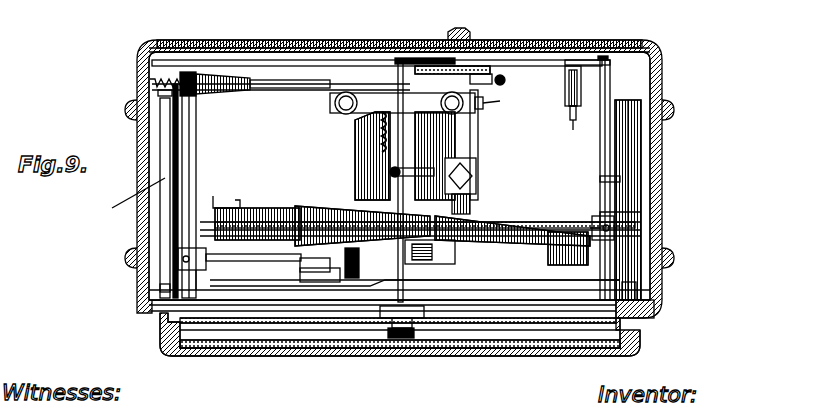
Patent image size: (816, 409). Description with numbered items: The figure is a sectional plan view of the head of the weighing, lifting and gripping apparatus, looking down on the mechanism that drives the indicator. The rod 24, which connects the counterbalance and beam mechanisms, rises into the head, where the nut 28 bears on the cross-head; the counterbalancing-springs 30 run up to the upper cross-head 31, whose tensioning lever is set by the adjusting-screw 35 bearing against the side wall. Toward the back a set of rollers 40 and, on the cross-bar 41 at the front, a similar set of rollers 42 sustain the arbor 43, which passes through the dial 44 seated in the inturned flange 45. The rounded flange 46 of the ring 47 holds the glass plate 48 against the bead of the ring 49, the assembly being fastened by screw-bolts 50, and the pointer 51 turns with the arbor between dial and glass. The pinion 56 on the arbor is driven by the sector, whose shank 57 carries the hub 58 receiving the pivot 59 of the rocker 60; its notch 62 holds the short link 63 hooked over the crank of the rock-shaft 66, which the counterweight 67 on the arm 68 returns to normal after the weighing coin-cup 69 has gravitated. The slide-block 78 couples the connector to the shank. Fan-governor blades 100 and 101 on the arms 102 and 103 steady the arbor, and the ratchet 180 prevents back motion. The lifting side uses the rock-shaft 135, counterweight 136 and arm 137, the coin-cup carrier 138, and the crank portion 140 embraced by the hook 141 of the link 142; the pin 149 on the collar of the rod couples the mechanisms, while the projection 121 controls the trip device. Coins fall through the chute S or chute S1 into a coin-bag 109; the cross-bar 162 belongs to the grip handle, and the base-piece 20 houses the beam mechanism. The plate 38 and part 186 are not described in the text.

The rod 24 is at (430, 48).
The nut 28 is at (458, 28).
The counterbalancing-springs 30 is at (497, 101).
The upper cross-head 31 is at (345, 113).
The adjusting-screw 35 is at (137, 78).
The plate 38 is at (320, 84).
The rollers 40 is at (412, 58).
The cross-bar 41 is at (640, 295).
The rollers 42 is at (414, 310).
The arbor 43 is at (385, 182).
The dial 44 is at (470, 325).
The inturned flange 45 is at (636, 325).
The rounded flange 46 is at (608, 356).
The ring 47 is at (628, 345).
The glass plate 48 is at (598, 336).
The ring 49 is at (168, 325).
The screw-bolts 50 is at (140, 318).
The pointer 51 is at (400, 338).
The pinion 56 is at (372, 42).
The shank 57 is at (606, 70).
The hub 58 is at (560, 86).
The pivot 59 is at (575, 128).
The rocker 60 is at (560, 42).
The notch 62 is at (586, 52).
The short link 63 is at (603, 42).
The rock-shaft 66 is at (606, 88).
The counterweight 67 is at (641, 145).
The arm 68 is at (641, 172).
The weighing coin-cup 69 is at (295, 214).
The slide-block 78 is at (470, 66).
The blade 100 is at (358, 180).
The blade 101 is at (434, 170).
The arm 102 is at (360, 140).
The arm 103 is at (455, 150).
The coin-bag 109 is at (506, 186).
The projection 121 is at (432, 256).
The rock-shaft 135 is at (200, 132).
The counterweight 136 is at (127, 200).
The arm 137 is at (196, 185).
The coin-cup carrier 138 is at (240, 258).
The crank portion 140 is at (150, 266).
The hook 141 is at (175, 295).
The link 142 is at (270, 272).
The pin 149 is at (368, 300).
The cross-bar 162 is at (478, 120).
The ratchet 180 is at (368, 282).
The bracket 186 is at (318, 270).
The base-piece 20 is at (401, 236).
The chute S is at (226, 197).
The chute S1 is at (612, 216).